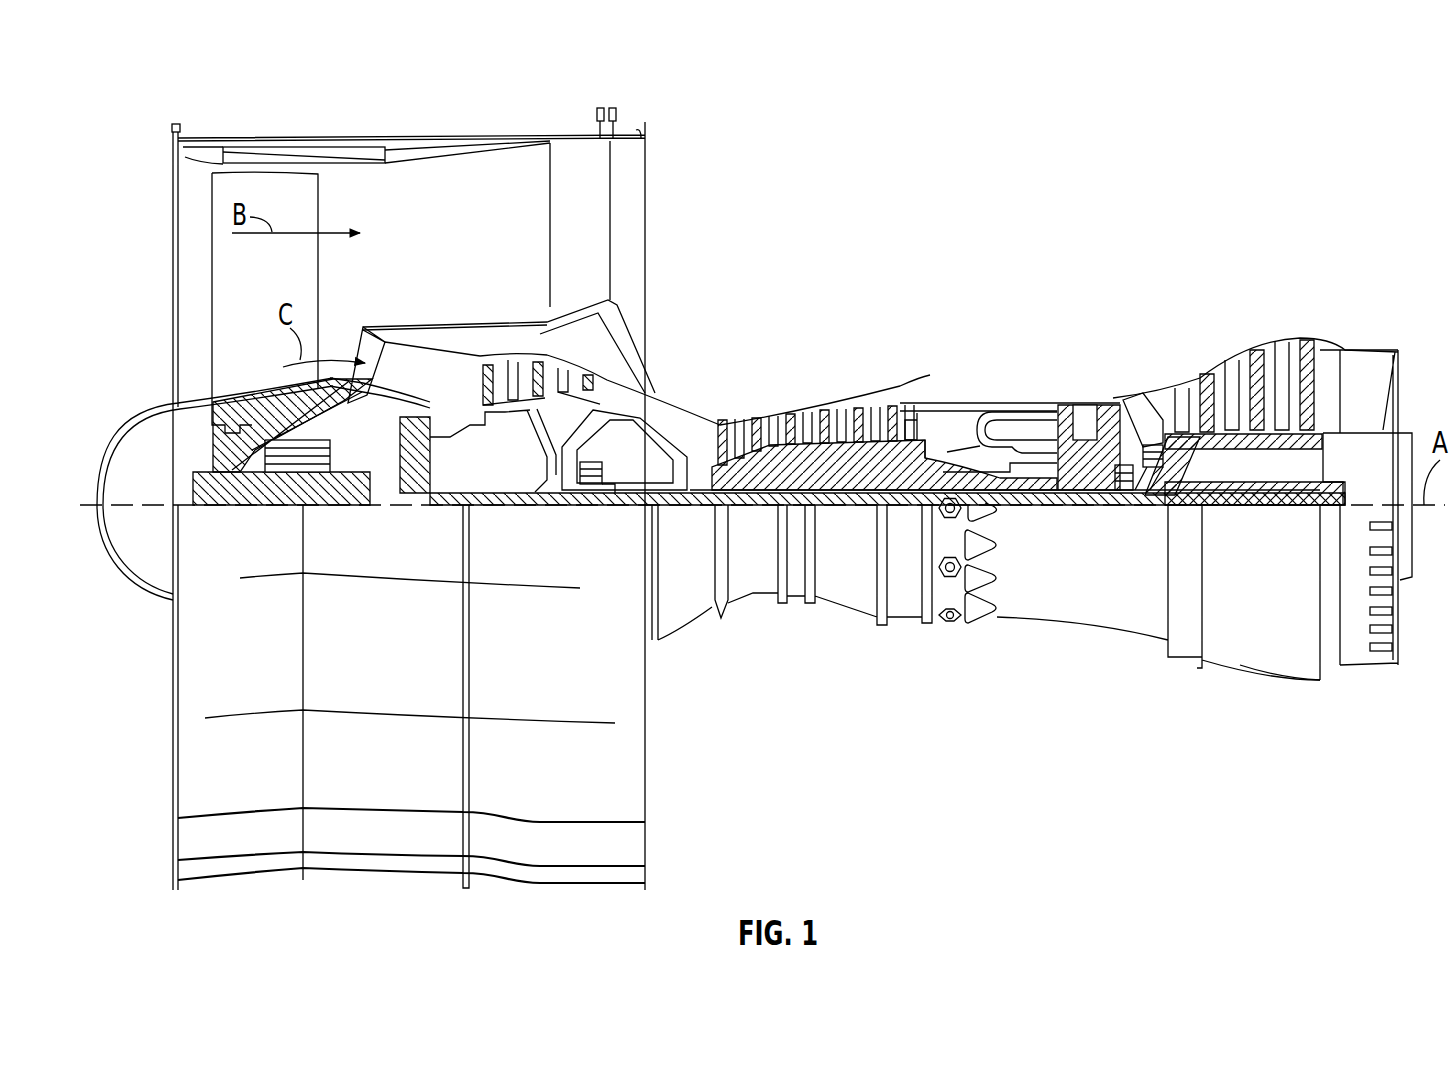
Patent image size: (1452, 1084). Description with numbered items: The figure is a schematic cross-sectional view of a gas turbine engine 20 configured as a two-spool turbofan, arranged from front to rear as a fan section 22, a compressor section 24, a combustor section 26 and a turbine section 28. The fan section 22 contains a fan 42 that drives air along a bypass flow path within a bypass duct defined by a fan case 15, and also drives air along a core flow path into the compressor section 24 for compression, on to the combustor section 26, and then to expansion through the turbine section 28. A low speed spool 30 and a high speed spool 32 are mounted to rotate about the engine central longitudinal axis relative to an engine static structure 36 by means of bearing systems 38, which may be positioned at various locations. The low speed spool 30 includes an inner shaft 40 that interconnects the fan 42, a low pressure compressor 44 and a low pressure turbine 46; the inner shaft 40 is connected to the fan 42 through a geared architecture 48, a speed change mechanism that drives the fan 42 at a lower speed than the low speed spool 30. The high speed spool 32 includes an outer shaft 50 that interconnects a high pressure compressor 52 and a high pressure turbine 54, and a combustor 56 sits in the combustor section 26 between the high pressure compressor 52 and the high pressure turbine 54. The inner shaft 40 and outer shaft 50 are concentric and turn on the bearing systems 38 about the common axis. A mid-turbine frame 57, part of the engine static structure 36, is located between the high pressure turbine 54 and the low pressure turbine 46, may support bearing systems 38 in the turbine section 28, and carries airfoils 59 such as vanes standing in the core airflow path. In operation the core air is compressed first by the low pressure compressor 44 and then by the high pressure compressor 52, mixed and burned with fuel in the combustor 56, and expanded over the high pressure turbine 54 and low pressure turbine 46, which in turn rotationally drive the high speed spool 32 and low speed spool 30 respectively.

The fan case 15 is at (415, 140).
The gas turbine engine 20 is at (1221, 173).
The fan section 22 is at (257, 109).
The compressor section 24 is at (716, 386).
The combustor section 26 is at (1002, 362).
The turbine section 28 is at (1128, 320).
The low speed spool 30 is at (868, 510).
The high speed spool 32 is at (920, 455).
The engine static structure 36 is at (906, 624).
The bearing systems 38 is at (590, 484).
The inner shaft 40 is at (660, 497).
The fan 42 is at (288, 281).
The low pressure compressor 44 is at (560, 380).
The low pressure turbine 46 is at (1268, 360).
The geared architecture 48 is at (410, 468).
The outer shaft 50 is at (1028, 498).
The high pressure compressor 52 is at (822, 420).
The high pressure turbine 54 is at (1090, 403).
The combustor 56 is at (1012, 425).
The mid-turbine frame 57 is at (1141, 391).
The airfoils 59 is at (1165, 428).